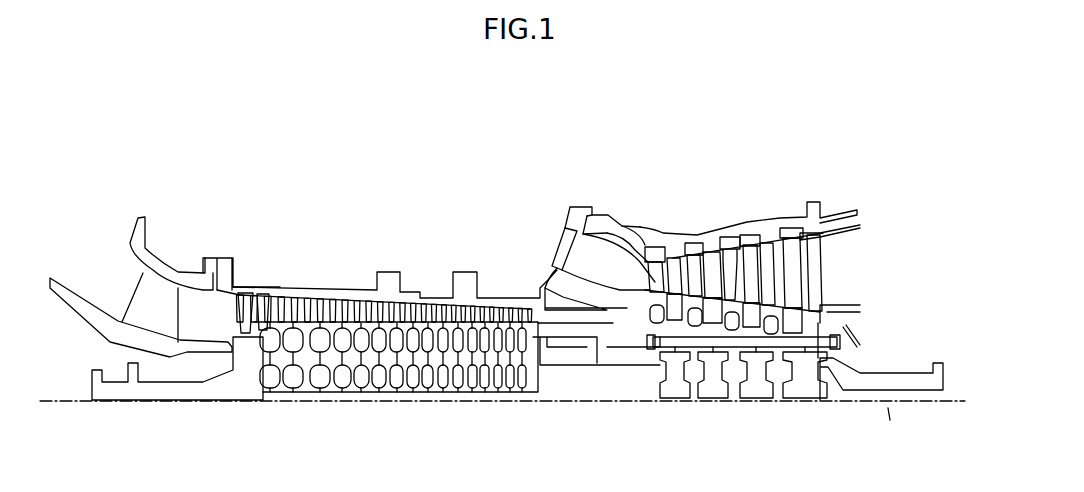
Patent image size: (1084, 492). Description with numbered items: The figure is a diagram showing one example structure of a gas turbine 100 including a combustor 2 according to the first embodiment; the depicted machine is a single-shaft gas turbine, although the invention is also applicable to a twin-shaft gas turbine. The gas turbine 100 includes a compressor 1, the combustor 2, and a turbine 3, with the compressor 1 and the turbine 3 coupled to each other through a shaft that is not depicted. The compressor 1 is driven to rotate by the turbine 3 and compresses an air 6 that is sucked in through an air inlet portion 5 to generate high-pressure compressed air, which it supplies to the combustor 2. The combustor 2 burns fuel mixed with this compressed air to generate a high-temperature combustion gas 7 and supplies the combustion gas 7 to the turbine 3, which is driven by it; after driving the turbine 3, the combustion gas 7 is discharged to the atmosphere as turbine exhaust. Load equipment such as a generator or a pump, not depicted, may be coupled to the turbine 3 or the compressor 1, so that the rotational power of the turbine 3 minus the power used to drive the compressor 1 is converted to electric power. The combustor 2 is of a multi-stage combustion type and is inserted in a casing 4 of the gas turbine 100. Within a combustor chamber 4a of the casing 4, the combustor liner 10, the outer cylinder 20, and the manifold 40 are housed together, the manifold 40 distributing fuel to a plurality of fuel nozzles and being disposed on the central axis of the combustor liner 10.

The gas turbine 100 is at (431, 168).
The compressor 1 is at (313, 404).
The combustor 2 is at (548, 258).
The turbine 3 is at (713, 406).
The casing 4 is at (691, 232).
The combustor chamber 4a is at (583, 205).
The air inlet portion 5 is at (126, 238).
The air 6 is at (88, 262).
The combustion gas 7 is at (728, 300).
The combustor liner 10 is at (636, 232).
The outer cylinder 20 is at (609, 224).
The manifold 40 is at (557, 248).